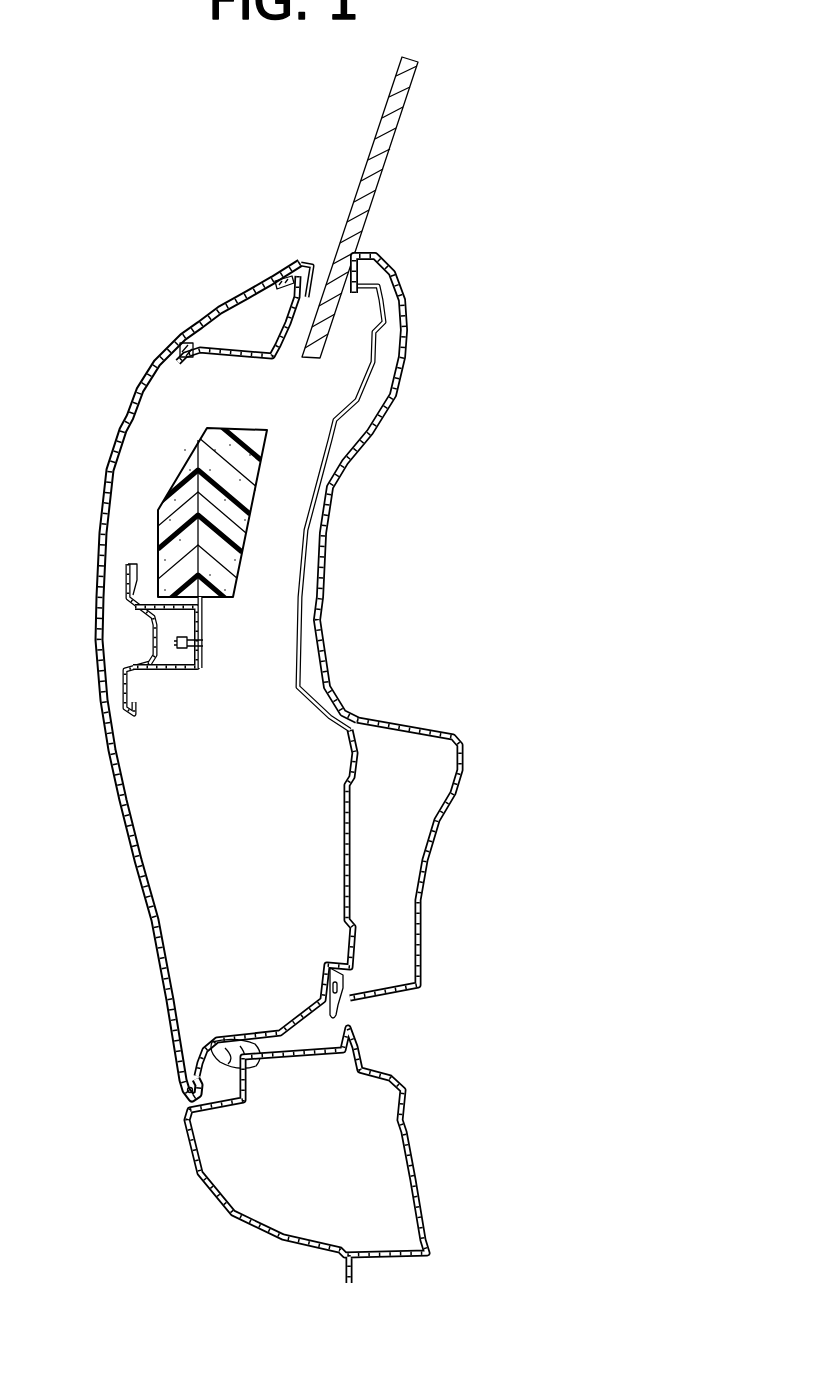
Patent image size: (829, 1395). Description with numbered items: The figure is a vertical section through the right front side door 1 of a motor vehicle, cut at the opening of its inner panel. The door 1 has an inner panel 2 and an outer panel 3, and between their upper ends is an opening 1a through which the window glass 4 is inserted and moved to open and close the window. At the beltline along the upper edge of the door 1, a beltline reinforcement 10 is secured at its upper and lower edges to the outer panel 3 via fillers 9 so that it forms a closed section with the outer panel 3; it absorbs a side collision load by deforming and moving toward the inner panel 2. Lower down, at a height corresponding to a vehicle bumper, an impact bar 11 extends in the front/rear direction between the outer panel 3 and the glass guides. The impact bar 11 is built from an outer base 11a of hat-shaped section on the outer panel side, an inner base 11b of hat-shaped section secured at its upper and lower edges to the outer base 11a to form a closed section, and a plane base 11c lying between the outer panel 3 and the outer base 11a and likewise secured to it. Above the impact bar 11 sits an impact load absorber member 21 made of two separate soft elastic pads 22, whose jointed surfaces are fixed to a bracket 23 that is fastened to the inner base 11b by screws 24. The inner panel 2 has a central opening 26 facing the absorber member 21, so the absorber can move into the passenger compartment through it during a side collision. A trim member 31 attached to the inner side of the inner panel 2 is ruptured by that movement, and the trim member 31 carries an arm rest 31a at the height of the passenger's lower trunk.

The front side door 1 is at (180, 313).
The opening 1a is at (318, 262).
The inner panel 2 is at (390, 400).
The outer panel 3 is at (118, 440).
The window glass 4 is at (373, 173).
The filler 9 is at (297, 273).
The beltline reinforcement 10 is at (280, 357).
The impact bar 11 is at (118, 550).
The outer base 11a is at (163, 643).
The inner base 11b is at (193, 668).
The plane base 11c is at (127, 632).
The impact load absorber member 21 is at (211, 416).
The pad 22 is at (238, 432).
The bracket 23 is at (207, 605).
The screw 24 is at (207, 641).
The opening 26 is at (340, 450).
The trim member 31 is at (461, 726).
The arm rest 31a is at (397, 720).